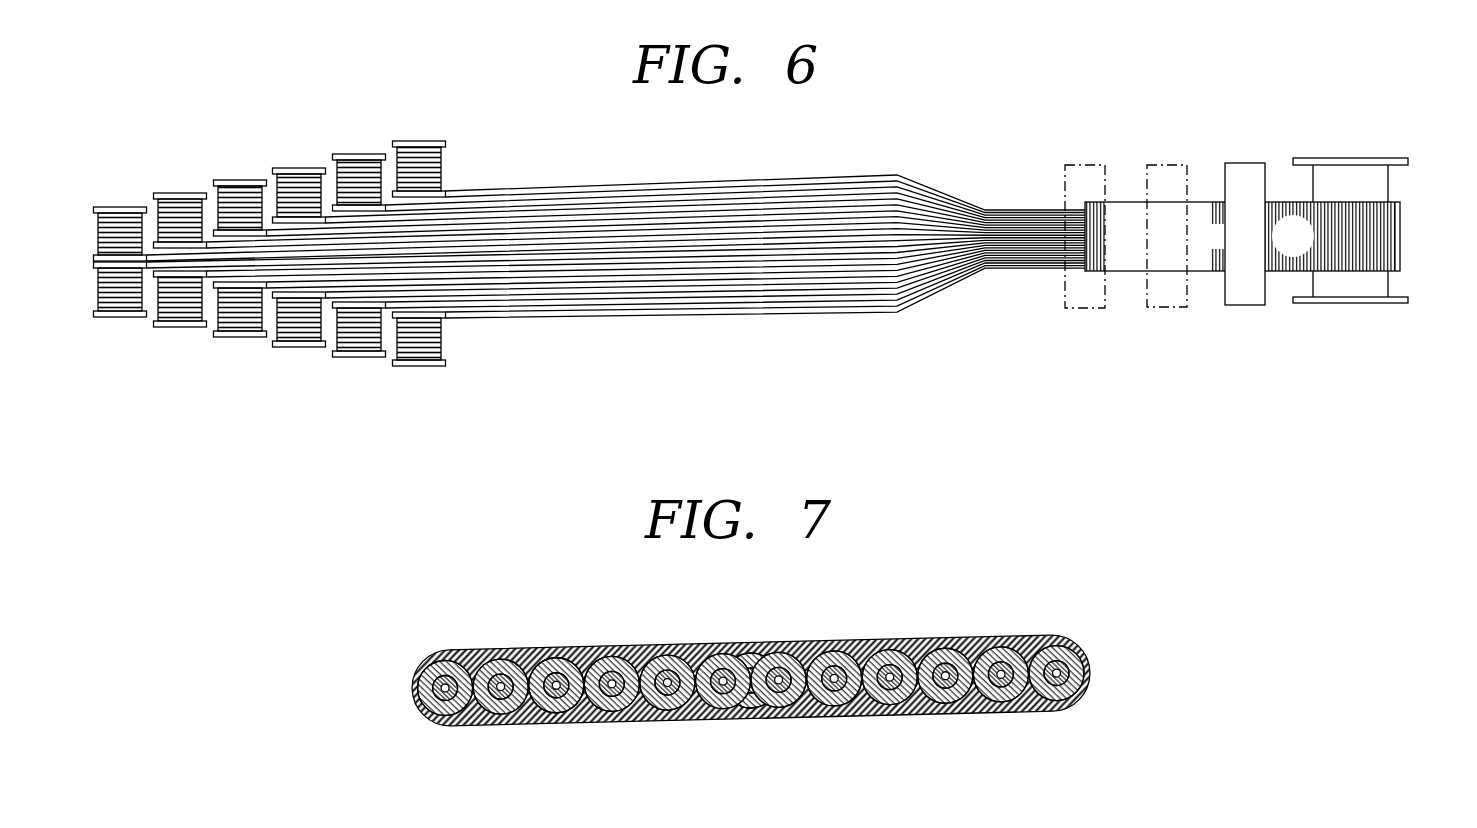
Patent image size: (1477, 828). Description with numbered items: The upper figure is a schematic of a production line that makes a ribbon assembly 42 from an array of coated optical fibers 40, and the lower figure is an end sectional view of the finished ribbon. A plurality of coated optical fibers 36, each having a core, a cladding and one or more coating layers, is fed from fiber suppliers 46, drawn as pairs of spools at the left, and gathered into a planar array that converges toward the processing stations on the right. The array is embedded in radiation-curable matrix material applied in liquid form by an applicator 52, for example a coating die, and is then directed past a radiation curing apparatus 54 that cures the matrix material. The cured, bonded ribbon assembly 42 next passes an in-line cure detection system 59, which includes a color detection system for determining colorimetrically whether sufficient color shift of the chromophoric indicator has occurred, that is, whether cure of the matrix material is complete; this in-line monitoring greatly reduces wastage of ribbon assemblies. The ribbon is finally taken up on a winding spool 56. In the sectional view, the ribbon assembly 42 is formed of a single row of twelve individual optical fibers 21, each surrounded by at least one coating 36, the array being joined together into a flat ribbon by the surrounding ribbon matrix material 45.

In FIG. 6, the array of coated optical fibers 40 is at (748, 137).
In FIG. 6, the fiber suppliers 46 is at (227, 338).
In FIG. 6, the coated optical fibers 36 is at (557, 303).
In FIG. 7, the coated optical fibers 36 is at (543, 652).
In FIG. 6, the ribbon assembly 42 is at (1397, 230).
In FIG. 7, the ribbon assembly 42 is at (766, 598).
In FIG. 6, the applicator 52 is at (1082, 308).
In FIG. 6, the radiation curing apparatus 54 is at (1168, 308).
In FIG. 6, the in-line cure detection system 59 is at (1248, 308).
In FIG. 6, the winding spool 56 is at (1308, 308).
In FIG. 7, the ribbon matrix material 45 is at (587, 648).
In FIG. 7, the optical fibers 21 is at (952, 642).